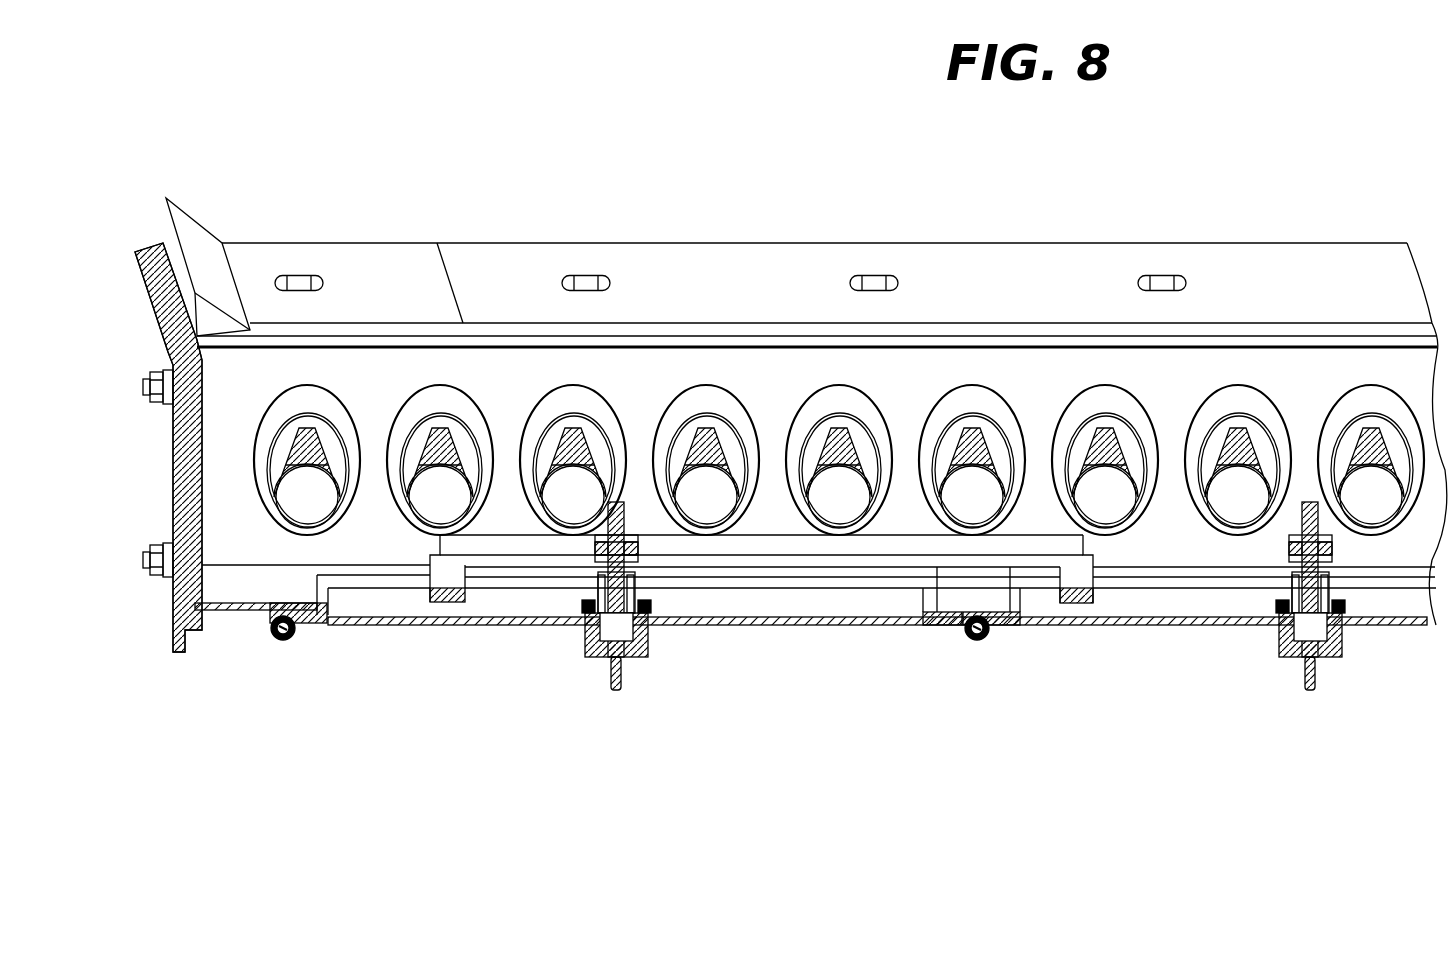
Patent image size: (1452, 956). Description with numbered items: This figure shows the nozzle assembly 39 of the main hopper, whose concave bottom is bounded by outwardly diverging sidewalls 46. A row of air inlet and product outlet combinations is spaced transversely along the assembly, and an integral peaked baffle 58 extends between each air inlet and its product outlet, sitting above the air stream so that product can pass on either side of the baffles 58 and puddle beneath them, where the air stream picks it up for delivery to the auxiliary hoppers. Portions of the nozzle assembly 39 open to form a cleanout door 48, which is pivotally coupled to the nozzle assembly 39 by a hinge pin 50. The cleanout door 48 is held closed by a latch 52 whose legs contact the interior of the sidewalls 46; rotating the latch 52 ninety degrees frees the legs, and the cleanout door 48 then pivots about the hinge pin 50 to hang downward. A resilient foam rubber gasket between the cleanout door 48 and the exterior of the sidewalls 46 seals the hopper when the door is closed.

The nozzle assembly 39 is at (228, 478).
The outwardly diverging sidewalls 46 is at (523, 386).
The cleanout door 48 is at (477, 626).
The hinge pin 50 is at (289, 641).
The latch 52 is at (580, 670).
The baffle 58 is at (430, 427).